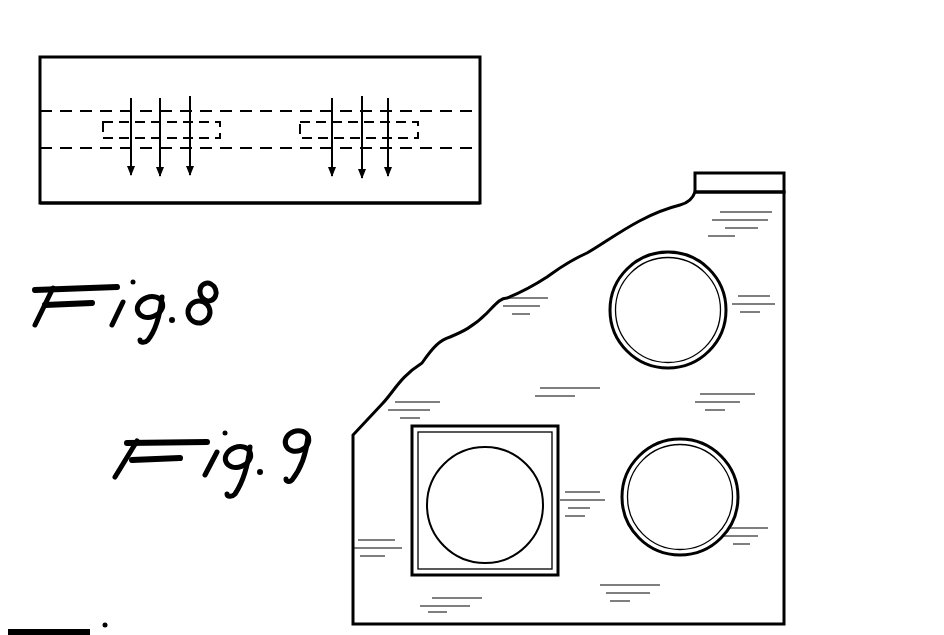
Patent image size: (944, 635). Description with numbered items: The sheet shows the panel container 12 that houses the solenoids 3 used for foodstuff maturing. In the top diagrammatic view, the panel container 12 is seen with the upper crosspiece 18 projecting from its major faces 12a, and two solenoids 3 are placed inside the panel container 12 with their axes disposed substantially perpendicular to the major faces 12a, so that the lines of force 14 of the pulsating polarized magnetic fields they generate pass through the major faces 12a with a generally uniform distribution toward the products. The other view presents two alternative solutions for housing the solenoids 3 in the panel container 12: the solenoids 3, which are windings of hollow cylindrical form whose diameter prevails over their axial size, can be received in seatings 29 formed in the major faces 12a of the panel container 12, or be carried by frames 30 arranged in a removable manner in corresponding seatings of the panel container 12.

In FIG. 8, the solenoid 3 is at (100, 140).
In FIG. 9, the solenoid 3 is at (645, 327).
In FIG. 8, the panel container 12 is at (275, 150).
In FIG. 9, the panel container 12 is at (522, 398).
In FIG. 9, the major faces 12a is at (580, 275).
In FIG. 8, the lines of force 14 is at (421, 32).
In FIG. 8, the upper crosspiece 18 is at (466, 84).
In FIG. 9, the seatings 29 is at (708, 352).
In FIG. 9, the frames 30 is at (523, 443).